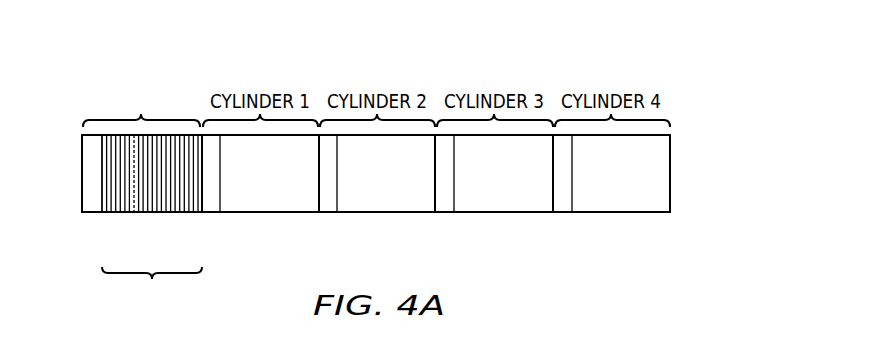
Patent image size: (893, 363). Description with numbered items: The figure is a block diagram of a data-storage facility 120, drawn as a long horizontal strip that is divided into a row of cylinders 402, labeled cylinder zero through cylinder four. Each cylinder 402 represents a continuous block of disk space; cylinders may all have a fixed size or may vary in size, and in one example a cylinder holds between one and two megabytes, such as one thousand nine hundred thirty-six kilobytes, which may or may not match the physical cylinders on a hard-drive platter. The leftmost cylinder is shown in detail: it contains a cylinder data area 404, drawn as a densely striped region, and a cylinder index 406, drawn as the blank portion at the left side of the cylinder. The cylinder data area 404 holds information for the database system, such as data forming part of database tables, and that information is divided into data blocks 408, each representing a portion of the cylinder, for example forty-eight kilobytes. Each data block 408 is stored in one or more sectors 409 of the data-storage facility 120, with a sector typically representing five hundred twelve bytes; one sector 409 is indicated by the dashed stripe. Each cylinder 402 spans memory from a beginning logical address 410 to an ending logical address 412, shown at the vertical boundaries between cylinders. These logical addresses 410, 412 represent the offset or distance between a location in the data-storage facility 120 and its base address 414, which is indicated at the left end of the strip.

The data-storage facility 120 is at (538, 60).
The cylinder 402 is at (142, 85).
The cylinder data area 404 is at (152, 221).
The cylinder index 406 is at (93, 207).
The data block 408 is at (194, 213).
The sector 409 is at (135, 212).
The beginning logical address 410 is at (322, 217).
The ending logical address 412 is at (438, 217).
The base address 414 is at (82, 213).